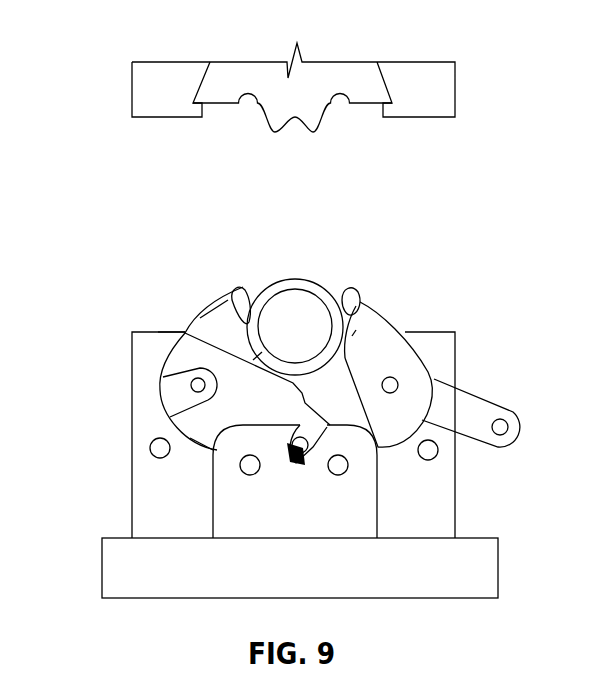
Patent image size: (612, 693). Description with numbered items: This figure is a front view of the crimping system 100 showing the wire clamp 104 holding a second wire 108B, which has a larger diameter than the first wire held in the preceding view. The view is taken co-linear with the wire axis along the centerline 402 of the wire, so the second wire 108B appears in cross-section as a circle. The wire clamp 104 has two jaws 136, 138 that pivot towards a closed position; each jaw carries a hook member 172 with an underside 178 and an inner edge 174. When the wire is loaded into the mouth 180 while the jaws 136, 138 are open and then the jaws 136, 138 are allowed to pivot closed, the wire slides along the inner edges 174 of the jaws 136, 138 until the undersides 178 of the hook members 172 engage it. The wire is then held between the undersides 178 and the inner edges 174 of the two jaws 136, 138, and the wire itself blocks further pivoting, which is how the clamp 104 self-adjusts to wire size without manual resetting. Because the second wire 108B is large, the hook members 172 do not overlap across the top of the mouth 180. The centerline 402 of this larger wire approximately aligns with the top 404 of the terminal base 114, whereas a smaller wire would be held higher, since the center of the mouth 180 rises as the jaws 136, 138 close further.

The crimping system 100 is at (93, 62).
The wire clamp 104 is at (197, 455).
The second wire 108B is at (314, 282).
The terminal base 114 is at (140, 382).
The jaw 136 is at (413, 370).
The jaw 138 is at (180, 357).
The hook member 172 is at (208, 313).
The inner edge 174 is at (253, 360).
The underside 178 is at (243, 315).
The mouth 180 is at (352, 337).
The centerline 402 is at (293, 325).
The top of the terminal base 404 is at (158, 332).